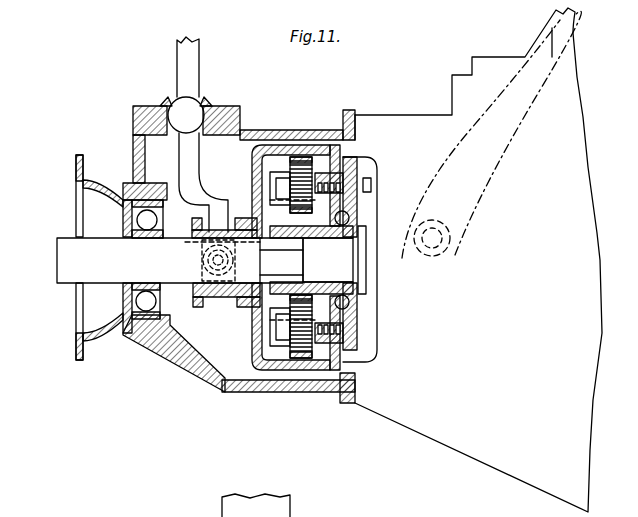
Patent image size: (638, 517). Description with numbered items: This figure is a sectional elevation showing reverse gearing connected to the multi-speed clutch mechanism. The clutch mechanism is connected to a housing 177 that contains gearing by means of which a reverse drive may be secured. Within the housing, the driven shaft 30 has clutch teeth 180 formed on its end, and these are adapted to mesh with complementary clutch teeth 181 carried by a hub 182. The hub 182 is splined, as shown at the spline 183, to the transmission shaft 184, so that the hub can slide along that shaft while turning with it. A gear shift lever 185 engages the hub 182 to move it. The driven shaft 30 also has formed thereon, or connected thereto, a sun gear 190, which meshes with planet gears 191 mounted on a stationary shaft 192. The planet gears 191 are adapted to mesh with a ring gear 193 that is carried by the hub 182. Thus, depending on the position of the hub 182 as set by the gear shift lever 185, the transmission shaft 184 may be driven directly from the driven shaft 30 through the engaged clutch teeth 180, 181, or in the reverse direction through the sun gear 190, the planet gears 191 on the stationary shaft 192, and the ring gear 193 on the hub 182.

The driven shaft 30 is at (357, 280).
The housing 177 is at (245, 130).
The clutch teeth 180 is at (283, 297).
The clutch teeth 181 is at (258, 203).
The hub 182 is at (232, 306).
The spline 183 is at (190, 238).
The transmission shaft 184 is at (68, 238).
The gear shift lever 185 is at (203, 188).
The sun gear 190 is at (258, 338).
The planet gears 191 is at (302, 160).
The stationary shaft 192 is at (278, 173).
The ring gear 193 is at (331, 160).